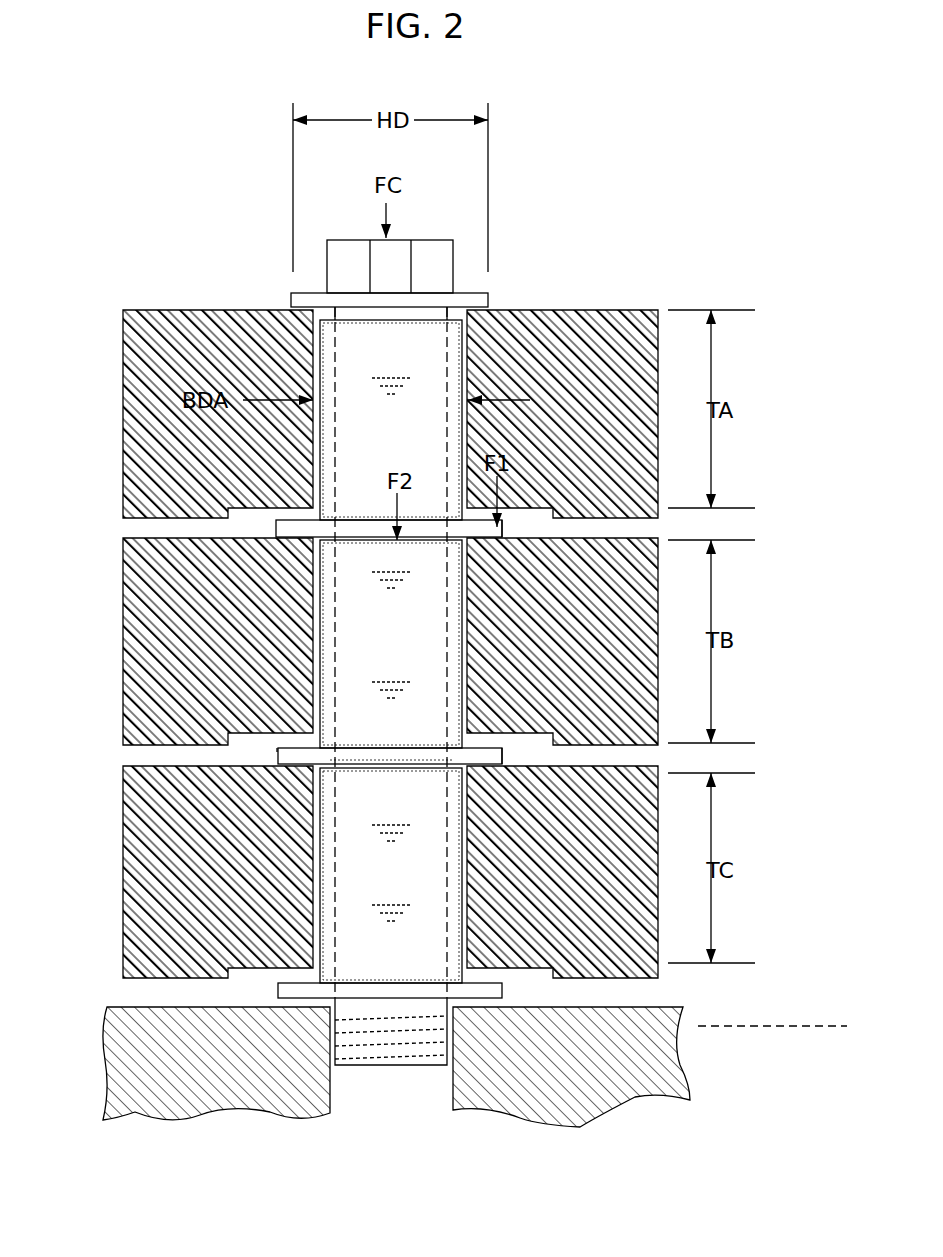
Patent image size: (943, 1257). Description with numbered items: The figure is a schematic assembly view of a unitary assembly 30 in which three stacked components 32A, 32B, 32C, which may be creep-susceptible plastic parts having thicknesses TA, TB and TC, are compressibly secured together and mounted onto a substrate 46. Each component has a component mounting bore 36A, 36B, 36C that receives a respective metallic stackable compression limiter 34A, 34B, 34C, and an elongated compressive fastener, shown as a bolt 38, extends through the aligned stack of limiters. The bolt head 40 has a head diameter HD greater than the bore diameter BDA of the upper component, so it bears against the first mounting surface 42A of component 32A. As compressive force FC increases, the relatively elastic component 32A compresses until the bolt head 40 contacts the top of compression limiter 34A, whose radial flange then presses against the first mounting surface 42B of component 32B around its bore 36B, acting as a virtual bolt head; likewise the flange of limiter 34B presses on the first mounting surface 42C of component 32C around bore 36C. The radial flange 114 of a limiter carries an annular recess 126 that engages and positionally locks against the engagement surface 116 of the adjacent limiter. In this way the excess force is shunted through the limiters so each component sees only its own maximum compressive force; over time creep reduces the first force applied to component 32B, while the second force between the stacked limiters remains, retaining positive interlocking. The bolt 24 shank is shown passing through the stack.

The unitary assembly 30 is at (672, 196).
The bolt 24 is at (321, 542).
The bolt head 40 is at (485, 300).
The first mounting surface 42A is at (275, 308).
The first mounting surface 42B is at (262, 528).
The first mounting surface 42C is at (265, 765).
The component 32A is at (541, 375).
The component 32B is at (541, 645).
The component 32C is at (541, 871).
The stackable compression limiter 34A is at (368, 433).
The stackable compression limiter 34B is at (369, 645).
The stackable compression limiter 34C is at (369, 871).
The component mounting bore 36A is at (462, 322).
The component mounting bore 36B is at (462, 712).
The component mounting bore 36C is at (462, 940).
The radial flange 114 is at (277, 752).
The engagement surface 116 is at (505, 528).
The annular recess 126 is at (392, 762).
The substrate 46 is at (552, 1072).
The bolt 38 is at (388, 1050).